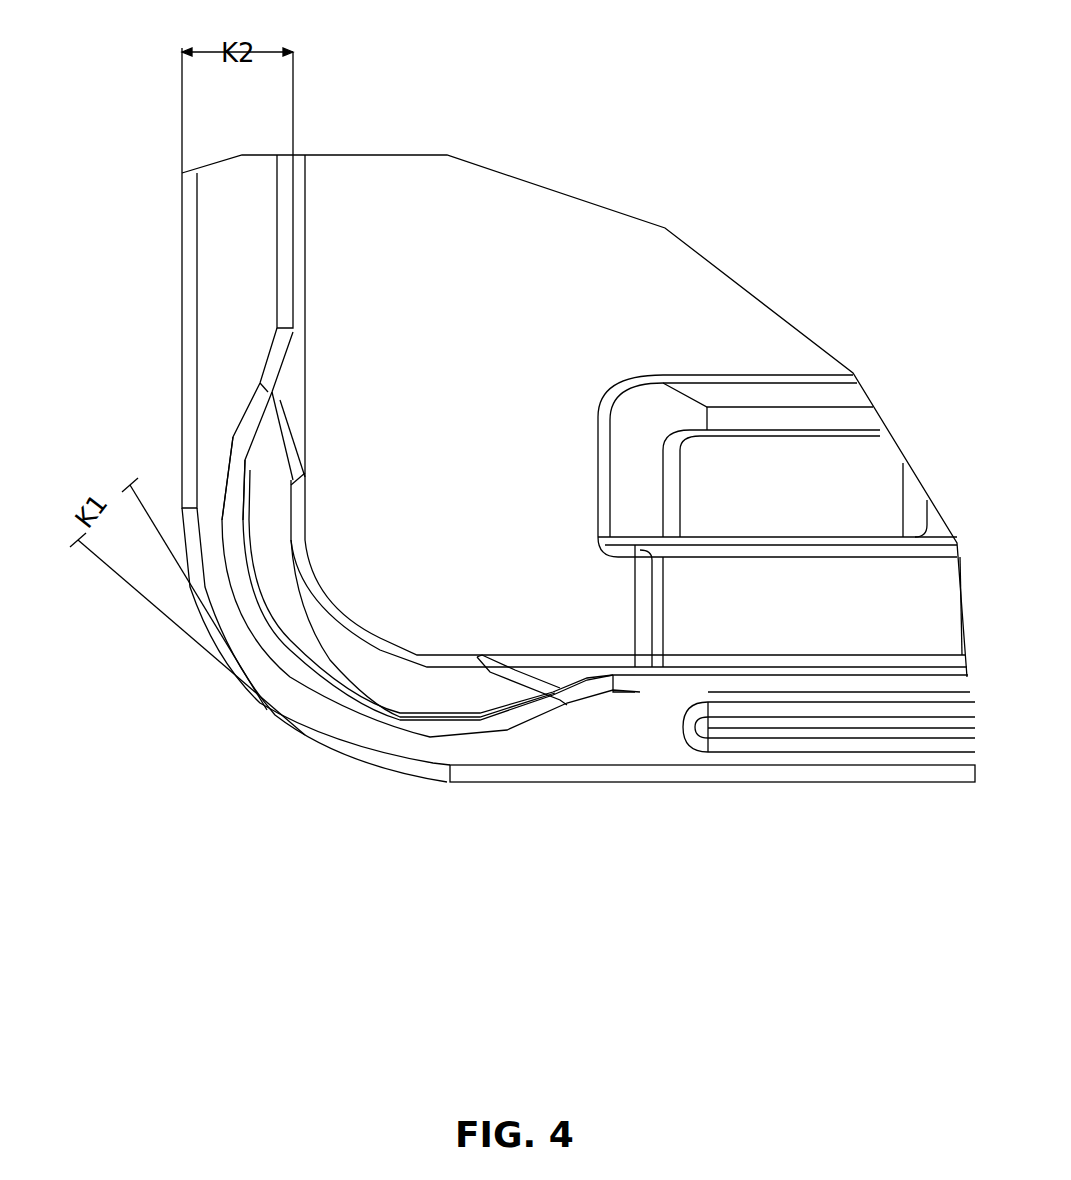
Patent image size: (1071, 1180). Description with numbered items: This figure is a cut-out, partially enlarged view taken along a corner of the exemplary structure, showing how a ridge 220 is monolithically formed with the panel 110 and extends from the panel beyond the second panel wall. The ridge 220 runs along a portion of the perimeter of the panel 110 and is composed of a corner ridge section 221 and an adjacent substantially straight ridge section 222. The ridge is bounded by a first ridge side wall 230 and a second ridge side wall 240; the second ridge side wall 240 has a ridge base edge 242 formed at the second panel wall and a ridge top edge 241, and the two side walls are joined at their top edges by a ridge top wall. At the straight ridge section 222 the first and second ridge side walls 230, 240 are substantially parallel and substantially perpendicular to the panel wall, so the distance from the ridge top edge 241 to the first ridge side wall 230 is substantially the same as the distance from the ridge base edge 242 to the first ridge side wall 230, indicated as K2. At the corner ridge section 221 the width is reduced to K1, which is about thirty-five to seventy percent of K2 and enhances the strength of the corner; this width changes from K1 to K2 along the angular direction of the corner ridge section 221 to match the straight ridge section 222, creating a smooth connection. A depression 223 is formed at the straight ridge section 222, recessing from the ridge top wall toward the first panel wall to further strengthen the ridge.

The panel 110 is at (520, 275).
The ridge 220 is at (230, 287).
The corner ridge section 221 is at (287, 752).
The ridge section 222 is at (163, 262).
The depression 223 is at (753, 723).
The ridge side wall 230 is at (317, 743).
The ridge side wall 240 is at (310, 623).
The ridge top edge 241 is at (362, 703).
The ridge base edge 242 is at (345, 628).